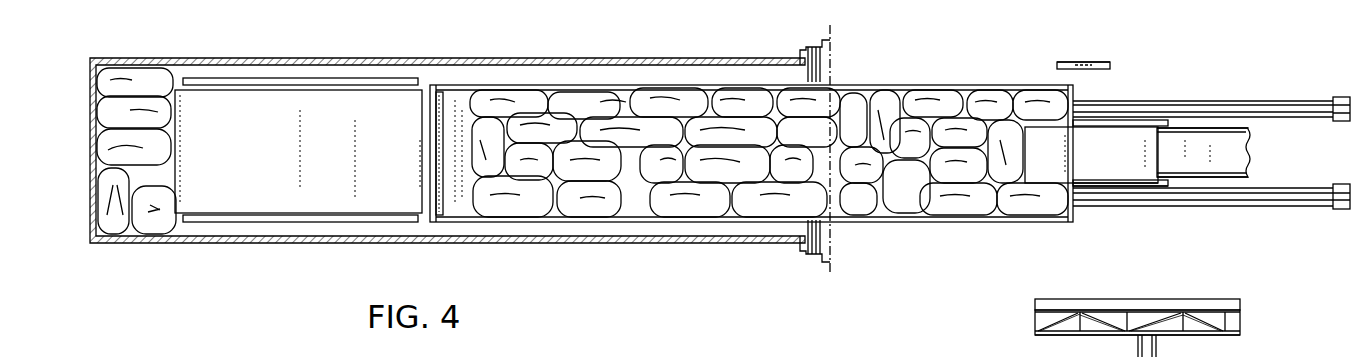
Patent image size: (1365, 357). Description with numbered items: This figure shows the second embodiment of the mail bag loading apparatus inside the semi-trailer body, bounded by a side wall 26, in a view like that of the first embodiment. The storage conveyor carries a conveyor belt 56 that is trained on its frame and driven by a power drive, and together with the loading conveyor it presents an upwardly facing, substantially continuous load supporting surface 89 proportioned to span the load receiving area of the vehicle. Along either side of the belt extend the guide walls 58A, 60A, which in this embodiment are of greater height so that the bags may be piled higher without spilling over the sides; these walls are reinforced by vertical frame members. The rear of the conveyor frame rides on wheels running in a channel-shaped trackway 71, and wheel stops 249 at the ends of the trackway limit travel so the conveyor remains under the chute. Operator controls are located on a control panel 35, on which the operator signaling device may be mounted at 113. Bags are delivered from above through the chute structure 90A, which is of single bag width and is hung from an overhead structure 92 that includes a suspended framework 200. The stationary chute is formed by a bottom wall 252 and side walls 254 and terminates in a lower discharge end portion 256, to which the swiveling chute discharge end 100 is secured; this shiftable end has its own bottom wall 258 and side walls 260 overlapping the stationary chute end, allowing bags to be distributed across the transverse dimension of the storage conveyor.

The load supporting surface 89 is at (453, 72).
The conveyor belt 56 is at (462, 110).
The guide wall 60A is at (640, 87).
The guide wall 58A is at (620, 222).
The control panel 35 is at (1057, 65).
The operator signaling device location 113 is at (1090, 62).
The side wall 26 is at (1099, 121).
The lower discharge end portion 256 is at (1165, 145).
The side walls 254 is at (1198, 128).
The bottom wall 252 is at (1228, 138).
The trackway 71 is at (1290, 107).
The wheel stops 249 is at (1343, 97).
The chute structure 90A is at (1258, 162).
The bottom wall 258 is at (1050, 168).
The chute discharge end 100 is at (1103, 187).
The side walls 260 is at (1140, 186).
The overhead structure 92 is at (1254, 305).
The framework 200 is at (1242, 321).